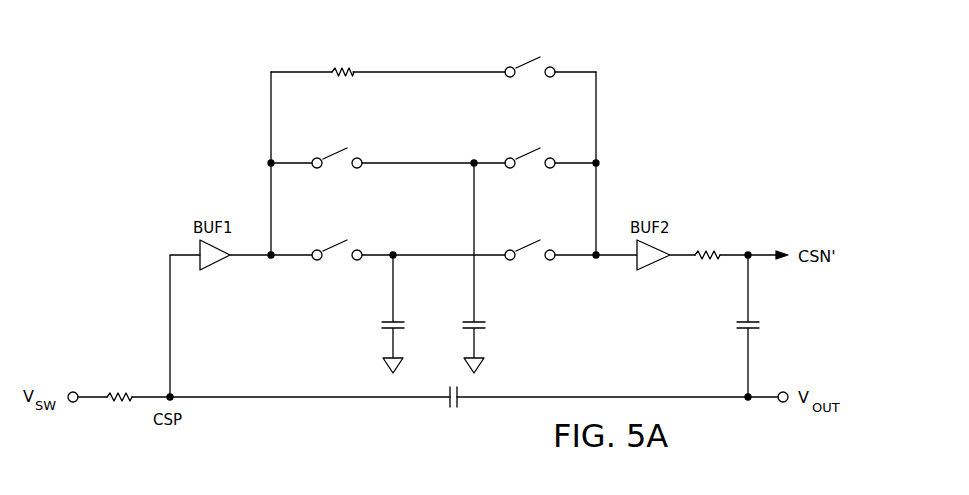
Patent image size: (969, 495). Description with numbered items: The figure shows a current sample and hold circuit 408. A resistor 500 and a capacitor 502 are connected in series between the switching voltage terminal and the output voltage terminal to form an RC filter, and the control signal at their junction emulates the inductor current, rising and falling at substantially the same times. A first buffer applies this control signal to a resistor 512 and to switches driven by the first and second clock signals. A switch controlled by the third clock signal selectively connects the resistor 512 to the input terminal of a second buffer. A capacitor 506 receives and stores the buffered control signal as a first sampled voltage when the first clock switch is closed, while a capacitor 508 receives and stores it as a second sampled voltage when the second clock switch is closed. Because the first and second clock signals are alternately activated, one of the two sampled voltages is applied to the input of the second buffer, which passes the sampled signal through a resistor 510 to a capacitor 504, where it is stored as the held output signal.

The current sample and hold circuit 408 is at (152, 167).
The resistor 500 is at (117, 405).
The capacitor 502 is at (452, 410).
The capacitor 504 is at (760, 325).
The capacitor 506 is at (380, 325).
The capacitor 508 is at (487, 325).
The resistor 510 is at (710, 248).
The resistor 512 is at (341, 68).